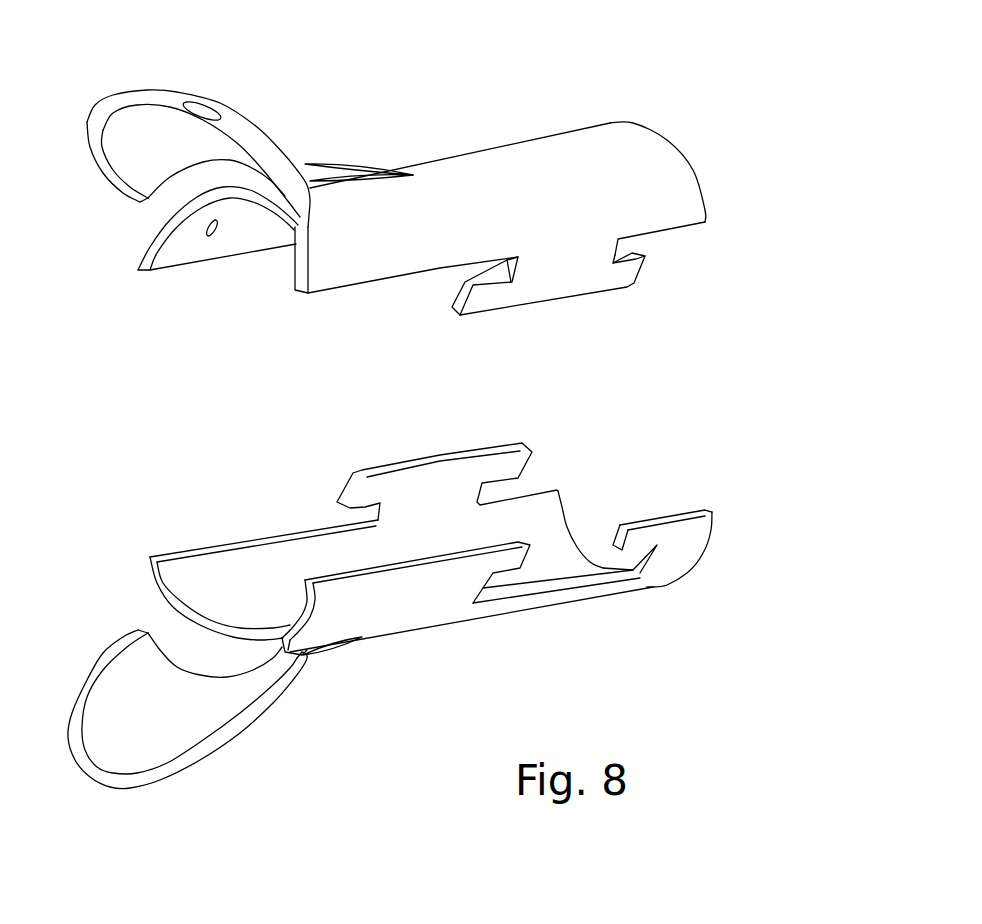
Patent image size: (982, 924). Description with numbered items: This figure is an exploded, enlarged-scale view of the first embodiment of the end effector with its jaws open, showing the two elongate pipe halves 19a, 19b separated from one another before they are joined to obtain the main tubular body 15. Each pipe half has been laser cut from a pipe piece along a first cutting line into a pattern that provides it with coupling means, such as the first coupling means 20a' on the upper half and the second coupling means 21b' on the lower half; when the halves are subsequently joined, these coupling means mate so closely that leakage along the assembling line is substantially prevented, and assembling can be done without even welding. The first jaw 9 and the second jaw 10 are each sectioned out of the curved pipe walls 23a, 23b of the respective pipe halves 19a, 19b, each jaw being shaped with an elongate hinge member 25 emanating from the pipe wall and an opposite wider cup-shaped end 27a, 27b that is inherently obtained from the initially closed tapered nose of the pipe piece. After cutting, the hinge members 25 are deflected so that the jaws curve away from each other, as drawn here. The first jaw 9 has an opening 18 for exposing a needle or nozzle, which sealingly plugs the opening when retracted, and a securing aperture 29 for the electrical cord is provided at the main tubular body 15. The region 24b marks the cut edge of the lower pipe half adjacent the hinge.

The cup-shaped end 27a is at (145, 88).
The opening 18 is at (200, 109).
The first jaw 9 is at (270, 150).
The hinge member 25 is at (312, 173).
The pipe half 19a is at (448, 180).
The main tubular body 15 is at (525, 167).
The curved pipe wall 23a is at (602, 167).
The securing aperture 29 is at (217, 233).
The second coupling means 21b' is at (447, 443).
The first coupling means 20a' is at (548, 321).
The cut-out edge 24b is at (373, 620).
The pipe half 19b is at (428, 593).
The curved pipe wall 23b is at (495, 618).
The second jaw 10 is at (133, 757).
The cup-shaped end 27b is at (245, 747).